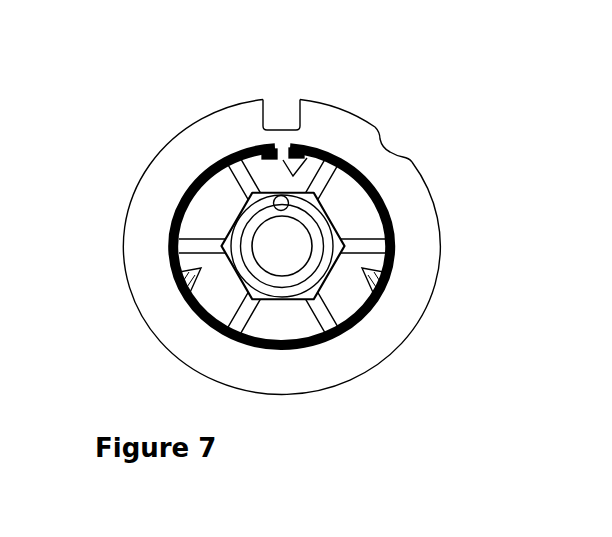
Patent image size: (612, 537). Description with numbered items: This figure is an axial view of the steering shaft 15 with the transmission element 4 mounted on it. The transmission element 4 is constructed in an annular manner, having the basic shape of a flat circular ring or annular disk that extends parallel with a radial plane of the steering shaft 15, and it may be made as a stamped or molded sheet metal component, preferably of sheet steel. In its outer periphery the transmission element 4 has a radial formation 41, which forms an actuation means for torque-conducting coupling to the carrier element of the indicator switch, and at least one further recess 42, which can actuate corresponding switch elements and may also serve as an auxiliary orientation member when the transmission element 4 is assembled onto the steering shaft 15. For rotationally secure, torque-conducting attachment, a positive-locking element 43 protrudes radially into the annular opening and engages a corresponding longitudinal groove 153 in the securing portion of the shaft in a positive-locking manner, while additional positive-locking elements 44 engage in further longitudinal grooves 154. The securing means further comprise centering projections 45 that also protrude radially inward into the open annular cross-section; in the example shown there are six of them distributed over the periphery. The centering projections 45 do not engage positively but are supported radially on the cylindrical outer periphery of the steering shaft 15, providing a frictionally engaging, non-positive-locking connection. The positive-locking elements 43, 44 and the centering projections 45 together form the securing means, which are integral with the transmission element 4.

The transmission element 4 is at (162, 195).
The steering shaft 15 is at (352, 215).
The radial formation 41 is at (280, 118).
The recess 42 is at (392, 136).
The positive-locking element 43 is at (283, 146).
The additional positive-locking elements 44 is at (185, 297).
The centering projections 45 is at (243, 173).
The longitudinal groove 153 is at (307, 158).
The longitudinal grooves 154 is at (385, 278).